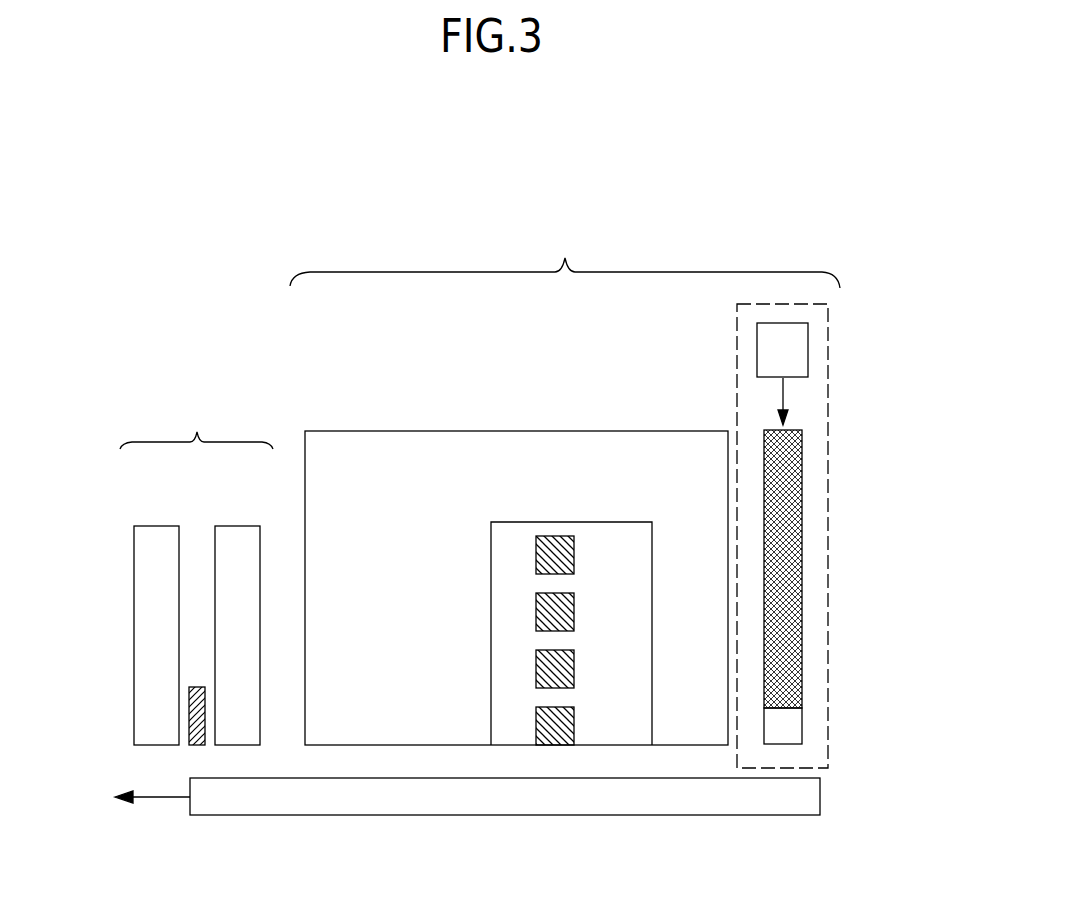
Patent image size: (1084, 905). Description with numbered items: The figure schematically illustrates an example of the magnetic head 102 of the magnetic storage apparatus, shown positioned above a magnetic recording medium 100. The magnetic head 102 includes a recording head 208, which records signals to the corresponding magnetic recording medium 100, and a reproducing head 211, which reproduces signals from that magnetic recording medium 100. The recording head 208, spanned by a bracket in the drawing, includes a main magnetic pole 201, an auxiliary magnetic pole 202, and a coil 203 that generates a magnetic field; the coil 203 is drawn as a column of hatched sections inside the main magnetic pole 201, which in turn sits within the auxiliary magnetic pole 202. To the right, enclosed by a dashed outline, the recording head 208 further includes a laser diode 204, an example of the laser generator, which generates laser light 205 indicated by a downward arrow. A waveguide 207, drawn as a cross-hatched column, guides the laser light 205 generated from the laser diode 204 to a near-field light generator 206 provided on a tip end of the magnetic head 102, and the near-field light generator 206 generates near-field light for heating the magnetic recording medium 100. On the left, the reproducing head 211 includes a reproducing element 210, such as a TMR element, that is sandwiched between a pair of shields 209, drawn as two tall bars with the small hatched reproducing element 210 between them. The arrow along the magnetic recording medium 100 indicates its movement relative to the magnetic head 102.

The magnetic recording medium 100 is at (805, 800).
The magnetic head 102 is at (882, 188).
The main magnetic pole 201 is at (713, 682).
The auxiliary magnetic pole 202 is at (455, 662).
The coil 203 is at (572, 557).
The laser diode 204 is at (798, 350).
The laser light 205 is at (783, 396).
The near-field light generator 206 is at (793, 725).
The waveguide 207 is at (788, 462).
The recording head 208 is at (565, 259).
The shields 209 is at (233, 536).
The reproducing element 210 is at (197, 742).
The reproducing head 211 is at (196, 427).